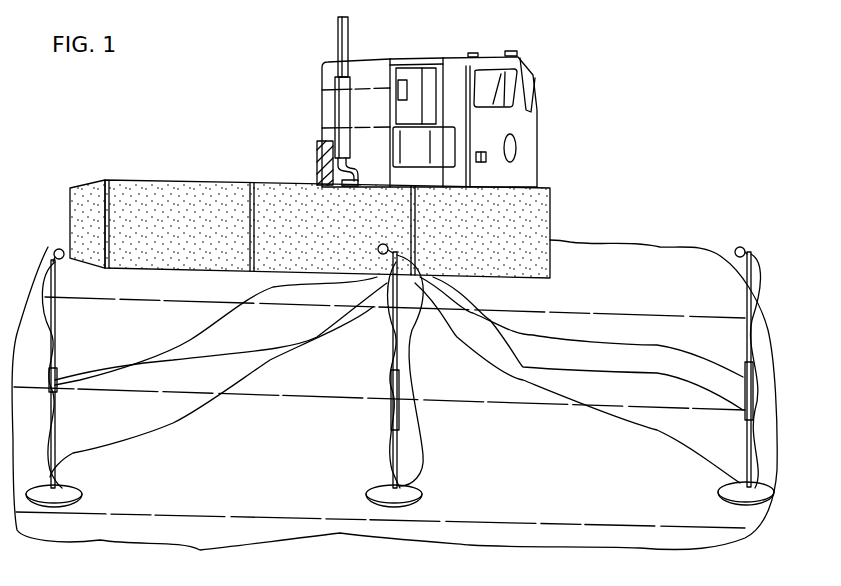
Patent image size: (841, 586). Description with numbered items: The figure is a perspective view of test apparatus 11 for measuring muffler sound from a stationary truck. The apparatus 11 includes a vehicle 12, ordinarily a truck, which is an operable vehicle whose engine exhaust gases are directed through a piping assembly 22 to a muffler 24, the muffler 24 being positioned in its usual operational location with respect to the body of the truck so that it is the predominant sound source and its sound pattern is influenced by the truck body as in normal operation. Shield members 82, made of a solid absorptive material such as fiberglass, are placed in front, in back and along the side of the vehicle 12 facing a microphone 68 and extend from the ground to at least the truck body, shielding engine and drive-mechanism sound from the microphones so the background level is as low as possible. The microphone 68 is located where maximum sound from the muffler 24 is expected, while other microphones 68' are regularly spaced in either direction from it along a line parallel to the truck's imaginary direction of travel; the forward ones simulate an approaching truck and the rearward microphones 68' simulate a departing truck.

The apparatus 11 is at (600, 74).
The vehicle 12 is at (402, 59).
The piping assembly 22 is at (337, 162).
The muffler 24 is at (340, 110).
The shield members 82 is at (95, 196).
The microphone 68 is at (396, 375).
The other microphones 68' is at (400, 377).